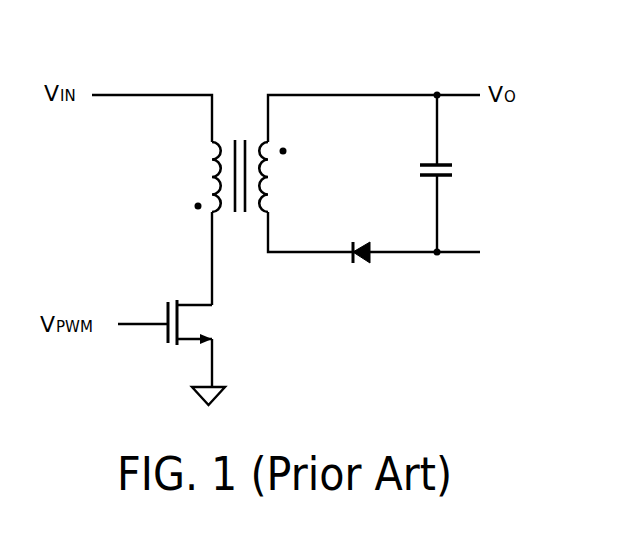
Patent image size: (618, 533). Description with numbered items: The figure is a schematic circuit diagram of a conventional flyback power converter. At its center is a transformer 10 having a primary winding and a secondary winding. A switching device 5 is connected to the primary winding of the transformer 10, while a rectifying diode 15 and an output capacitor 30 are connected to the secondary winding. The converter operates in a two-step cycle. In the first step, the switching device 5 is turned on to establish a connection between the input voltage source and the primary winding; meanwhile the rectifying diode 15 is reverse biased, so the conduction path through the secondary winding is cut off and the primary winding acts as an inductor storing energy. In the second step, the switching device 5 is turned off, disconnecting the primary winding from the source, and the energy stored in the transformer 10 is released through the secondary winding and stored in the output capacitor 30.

The switching device 5 is at (165, 300).
The transformer 10 is at (240, 130).
The rectifying diode 15 is at (362, 265).
The output capacitor 30 is at (455, 170).